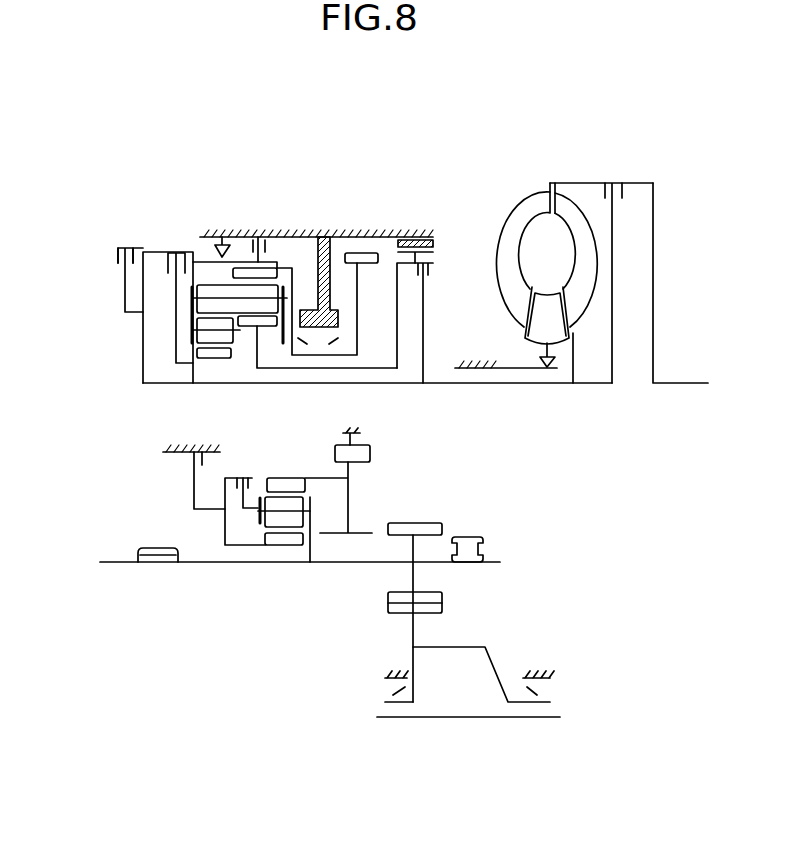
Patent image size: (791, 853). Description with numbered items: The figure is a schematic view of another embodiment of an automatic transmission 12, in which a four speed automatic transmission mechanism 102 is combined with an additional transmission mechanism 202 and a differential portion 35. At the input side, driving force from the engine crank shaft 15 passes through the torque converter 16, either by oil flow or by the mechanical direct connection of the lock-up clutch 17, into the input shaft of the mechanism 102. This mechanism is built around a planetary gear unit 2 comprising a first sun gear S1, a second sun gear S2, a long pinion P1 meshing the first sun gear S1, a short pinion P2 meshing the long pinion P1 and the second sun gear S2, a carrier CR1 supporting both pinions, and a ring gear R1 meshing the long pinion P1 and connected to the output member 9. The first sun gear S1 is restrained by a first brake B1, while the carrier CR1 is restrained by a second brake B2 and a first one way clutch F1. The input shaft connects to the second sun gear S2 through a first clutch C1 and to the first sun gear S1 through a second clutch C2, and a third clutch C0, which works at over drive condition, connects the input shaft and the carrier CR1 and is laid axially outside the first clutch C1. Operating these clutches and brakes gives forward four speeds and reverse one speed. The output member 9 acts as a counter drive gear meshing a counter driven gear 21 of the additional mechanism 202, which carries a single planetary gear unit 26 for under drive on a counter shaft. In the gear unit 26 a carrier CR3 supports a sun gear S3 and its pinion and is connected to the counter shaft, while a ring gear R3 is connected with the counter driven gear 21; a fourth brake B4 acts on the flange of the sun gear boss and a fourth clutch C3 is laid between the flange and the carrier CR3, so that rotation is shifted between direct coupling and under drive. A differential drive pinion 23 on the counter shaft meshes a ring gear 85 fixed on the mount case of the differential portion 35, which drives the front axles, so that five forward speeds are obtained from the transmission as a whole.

The automatic transmission 12 is at (152, 154).
The four speed automatic transmission mechanism 102 is at (187, 160).
The planetary gear unit 2 is at (191, 247).
The third clutch C0 is at (118, 255).
The first clutch C1 is at (172, 262).
The first one way clutch F1 is at (222, 244).
The second brake B2 is at (252, 252).
The ring gear R1 is at (267, 273).
The output member 9 is at (360, 253).
The first brake B1 is at (437, 243).
The second clutch C2 is at (430, 273).
The torque converter 16 is at (528, 200).
The lock-up clutch 17 is at (628, 188).
The engine crank shaft 15 is at (680, 382).
The long pinion P1 is at (207, 302).
The carrier CR1 is at (207, 333).
The short pinion P2 is at (202, 338).
The second sun gear S2 is at (222, 358).
The first sun gear S1 is at (247, 327).
The additional transmission mechanism 202 is at (150, 481).
The fourth brake B4 is at (188, 457).
The fourth clutch C3 is at (243, 478).
The carrier CR3 is at (258, 515).
The ring gear R3 is at (307, 485).
The sun gear S3 is at (285, 542).
The single planetary gear unit 26 is at (297, 472).
The counter driven gear 21 is at (372, 458).
The differential drive pinion 23 is at (428, 522).
The ring gear 85 is at (442, 607).
The differential portion 35 is at (507, 651).